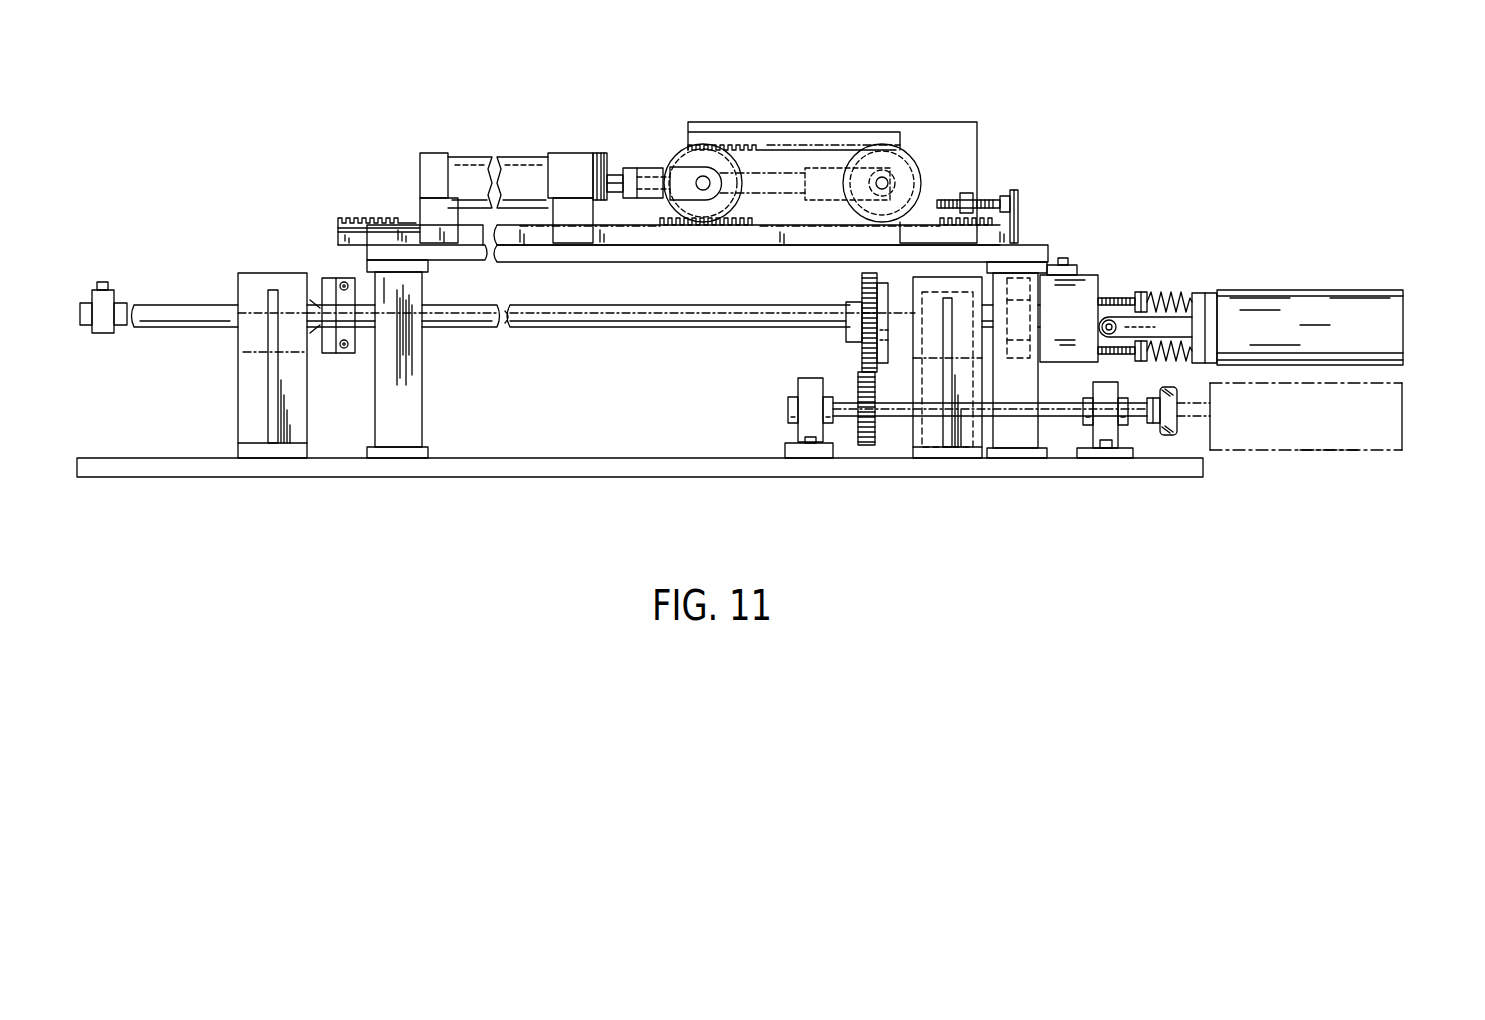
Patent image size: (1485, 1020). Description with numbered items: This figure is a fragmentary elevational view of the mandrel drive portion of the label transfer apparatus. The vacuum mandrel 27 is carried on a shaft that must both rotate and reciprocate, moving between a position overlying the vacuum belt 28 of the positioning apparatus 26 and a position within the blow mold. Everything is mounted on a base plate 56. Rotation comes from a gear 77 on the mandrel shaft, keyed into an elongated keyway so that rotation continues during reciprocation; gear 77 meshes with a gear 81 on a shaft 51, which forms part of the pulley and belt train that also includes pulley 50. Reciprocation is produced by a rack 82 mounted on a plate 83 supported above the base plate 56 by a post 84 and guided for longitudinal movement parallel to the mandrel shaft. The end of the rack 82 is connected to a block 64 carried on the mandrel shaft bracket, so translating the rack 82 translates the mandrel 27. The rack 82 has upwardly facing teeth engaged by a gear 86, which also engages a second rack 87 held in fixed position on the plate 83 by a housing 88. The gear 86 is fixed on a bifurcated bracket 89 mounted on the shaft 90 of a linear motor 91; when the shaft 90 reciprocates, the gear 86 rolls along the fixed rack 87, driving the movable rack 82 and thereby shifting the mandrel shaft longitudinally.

The positioning apparatus 26 is at (1413, 447).
The vacuum mandrel 27 is at (1406, 296).
The endless vacuum belt 28 is at (1318, 452).
The pulley 50 is at (1168, 437).
The shaft 51 is at (1060, 420).
The plate 56 is at (541, 465).
The block 64 is at (1090, 292).
The gear 77 is at (862, 295).
The gear 81 is at (866, 447).
The rack 82 is at (356, 218).
The plate 83 is at (375, 250).
The post 84 is at (407, 403).
The gear 86 is at (690, 165).
The second rack 87 is at (772, 158).
The housing 88 is at (960, 162).
The bifurcated bracket 89 is at (652, 173).
The shaft 90 is at (615, 173).
The linear motor 91 is at (527, 178).